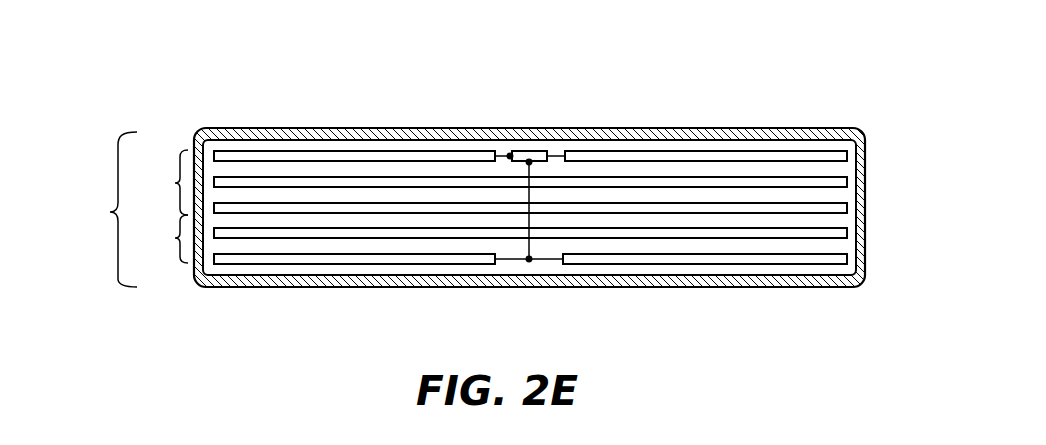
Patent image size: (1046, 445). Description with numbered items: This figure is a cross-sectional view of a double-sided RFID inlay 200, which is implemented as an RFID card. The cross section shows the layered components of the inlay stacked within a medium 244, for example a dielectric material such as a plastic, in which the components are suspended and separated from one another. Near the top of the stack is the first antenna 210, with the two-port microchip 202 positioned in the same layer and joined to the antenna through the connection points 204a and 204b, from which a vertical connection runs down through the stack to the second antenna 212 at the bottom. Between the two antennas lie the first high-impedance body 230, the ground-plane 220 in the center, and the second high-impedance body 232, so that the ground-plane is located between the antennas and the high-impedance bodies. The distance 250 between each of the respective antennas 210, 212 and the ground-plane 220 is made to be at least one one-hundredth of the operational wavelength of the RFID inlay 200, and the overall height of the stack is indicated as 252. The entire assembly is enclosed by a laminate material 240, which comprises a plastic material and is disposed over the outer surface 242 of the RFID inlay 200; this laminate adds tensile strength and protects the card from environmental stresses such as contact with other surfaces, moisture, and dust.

The RFID inlay 200 is at (305, 93).
The two-port microchip 202 is at (528, 150).
The first connection node 204a is at (506, 154).
The second connection node 204b is at (532, 164).
The first antenna 210 is at (847, 152).
The second antenna 212 is at (847, 255).
The ground-plane 220 is at (847, 204).
The first high-impedance body 230 is at (847, 179).
The second high-impedance body 232 is at (847, 229).
The laminate material 240 is at (276, 283).
The outer surface 242 is at (353, 283).
The medium 244 is at (707, 270).
The distance 250 is at (158, 206).
The plate stack 252 is at (102, 209).